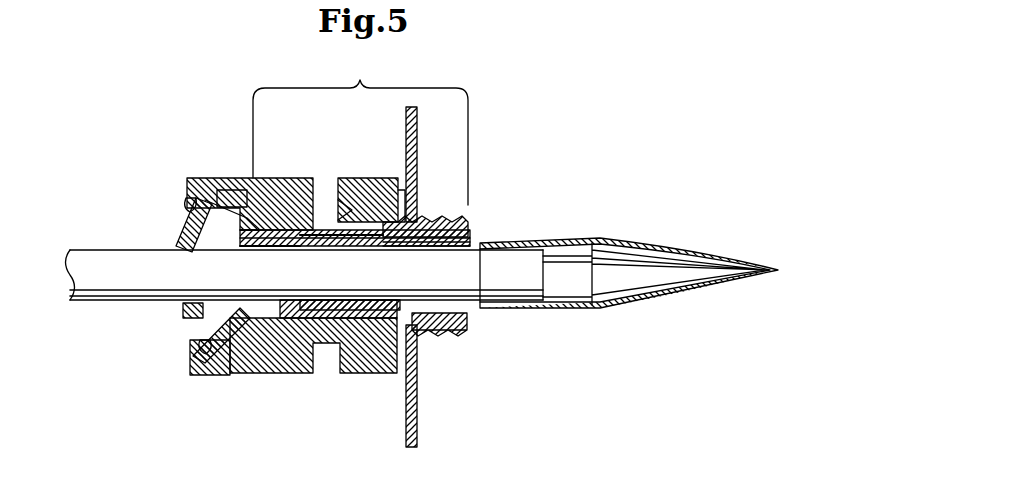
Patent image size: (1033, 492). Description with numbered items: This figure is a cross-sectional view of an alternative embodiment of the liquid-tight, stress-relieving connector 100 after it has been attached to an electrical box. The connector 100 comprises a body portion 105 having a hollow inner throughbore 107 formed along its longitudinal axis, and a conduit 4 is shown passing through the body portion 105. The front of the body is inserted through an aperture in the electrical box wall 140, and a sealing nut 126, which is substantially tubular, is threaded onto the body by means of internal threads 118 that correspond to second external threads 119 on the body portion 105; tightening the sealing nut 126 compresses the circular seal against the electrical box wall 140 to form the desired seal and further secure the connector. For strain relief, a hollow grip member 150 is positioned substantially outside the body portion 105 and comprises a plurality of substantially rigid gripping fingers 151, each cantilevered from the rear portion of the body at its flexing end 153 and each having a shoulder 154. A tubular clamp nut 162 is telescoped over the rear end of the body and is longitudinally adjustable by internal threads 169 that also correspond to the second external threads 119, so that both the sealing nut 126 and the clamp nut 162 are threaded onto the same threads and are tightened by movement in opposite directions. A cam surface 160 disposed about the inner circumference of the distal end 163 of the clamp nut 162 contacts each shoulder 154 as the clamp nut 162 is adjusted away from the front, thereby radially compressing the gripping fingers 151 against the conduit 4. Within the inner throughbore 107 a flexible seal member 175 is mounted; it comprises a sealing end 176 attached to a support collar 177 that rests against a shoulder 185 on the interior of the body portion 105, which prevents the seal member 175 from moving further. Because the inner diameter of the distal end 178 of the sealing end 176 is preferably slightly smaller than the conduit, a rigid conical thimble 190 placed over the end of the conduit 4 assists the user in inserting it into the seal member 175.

The conduit 4 is at (114, 283).
The connector 100 is at (290, 412).
The body portion 105 is at (360, 124).
The hollow inner throughbore 107 is at (470, 238).
The internal threads 118 is at (385, 178).
The second external threads 119 is at (398, 240).
The sealing nut 126 is at (350, 187).
The electrical box wall 140 is at (420, 410).
The hollow grip member 150 is at (176, 342).
The gripping fingers 151 is at (183, 235).
The flexing end 153 is at (226, 200).
The shoulder 154 is at (217, 190).
The cam surface 160 is at (187, 204).
The clamp nut 162 is at (207, 178).
The distal end 163 is at (193, 357).
The internal threads 169 is at (300, 352).
The flexible seal member 175 is at (332, 238).
The sealing end 176 is at (298, 244).
The support collar 177 is at (248, 246).
The distal end 178 is at (350, 302).
The shoulder 185 is at (183, 306).
The conical thimble 190 is at (650, 272).